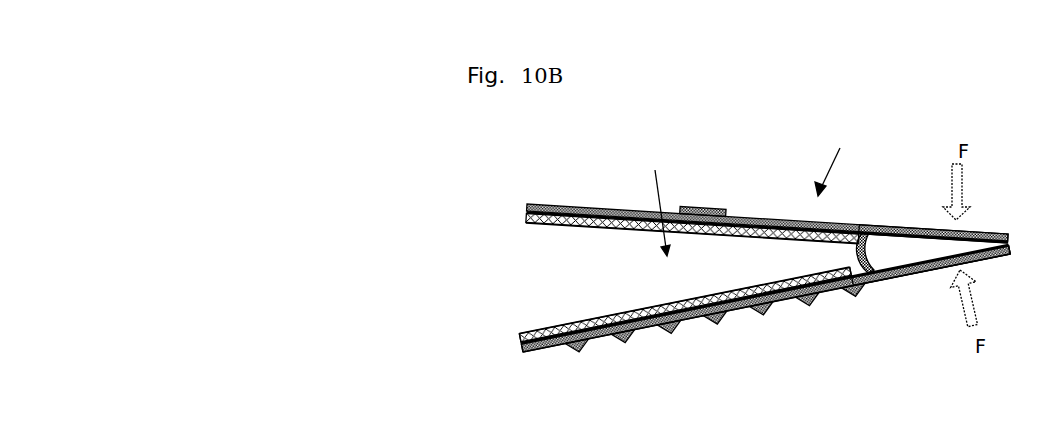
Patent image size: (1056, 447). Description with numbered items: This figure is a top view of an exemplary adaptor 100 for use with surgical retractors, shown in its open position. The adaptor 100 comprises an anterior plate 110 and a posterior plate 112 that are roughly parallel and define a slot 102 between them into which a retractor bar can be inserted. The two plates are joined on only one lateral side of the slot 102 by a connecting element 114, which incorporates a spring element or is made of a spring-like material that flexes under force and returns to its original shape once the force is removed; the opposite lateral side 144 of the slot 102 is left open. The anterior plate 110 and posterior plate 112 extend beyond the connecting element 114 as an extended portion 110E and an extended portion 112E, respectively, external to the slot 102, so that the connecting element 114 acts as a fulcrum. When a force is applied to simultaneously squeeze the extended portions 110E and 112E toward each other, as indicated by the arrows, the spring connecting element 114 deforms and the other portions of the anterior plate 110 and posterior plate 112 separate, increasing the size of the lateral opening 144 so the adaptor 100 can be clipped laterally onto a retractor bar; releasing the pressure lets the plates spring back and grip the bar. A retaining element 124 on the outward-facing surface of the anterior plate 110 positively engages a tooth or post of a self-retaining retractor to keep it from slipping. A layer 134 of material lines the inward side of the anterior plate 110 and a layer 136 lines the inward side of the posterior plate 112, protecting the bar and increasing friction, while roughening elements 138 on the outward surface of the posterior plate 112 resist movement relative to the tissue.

The adaptor 100 is at (848, 159).
The slot 102 is at (648, 200).
The anterior plate 110 is at (719, 188).
The extended portion of the anterior plate 110E is at (947, 212).
The posterior plate 112 is at (726, 314).
The extended portion of the posterior plate 112E is at (931, 265).
The connecting element 114 is at (861, 255).
The retaining element 124 is at (723, 192).
The layer of material 134 is at (632, 215).
The layer of material 136 is at (631, 317).
The roughening elements 138 is at (716, 318).
The lateral opening of the slot 144 is at (536, 277).